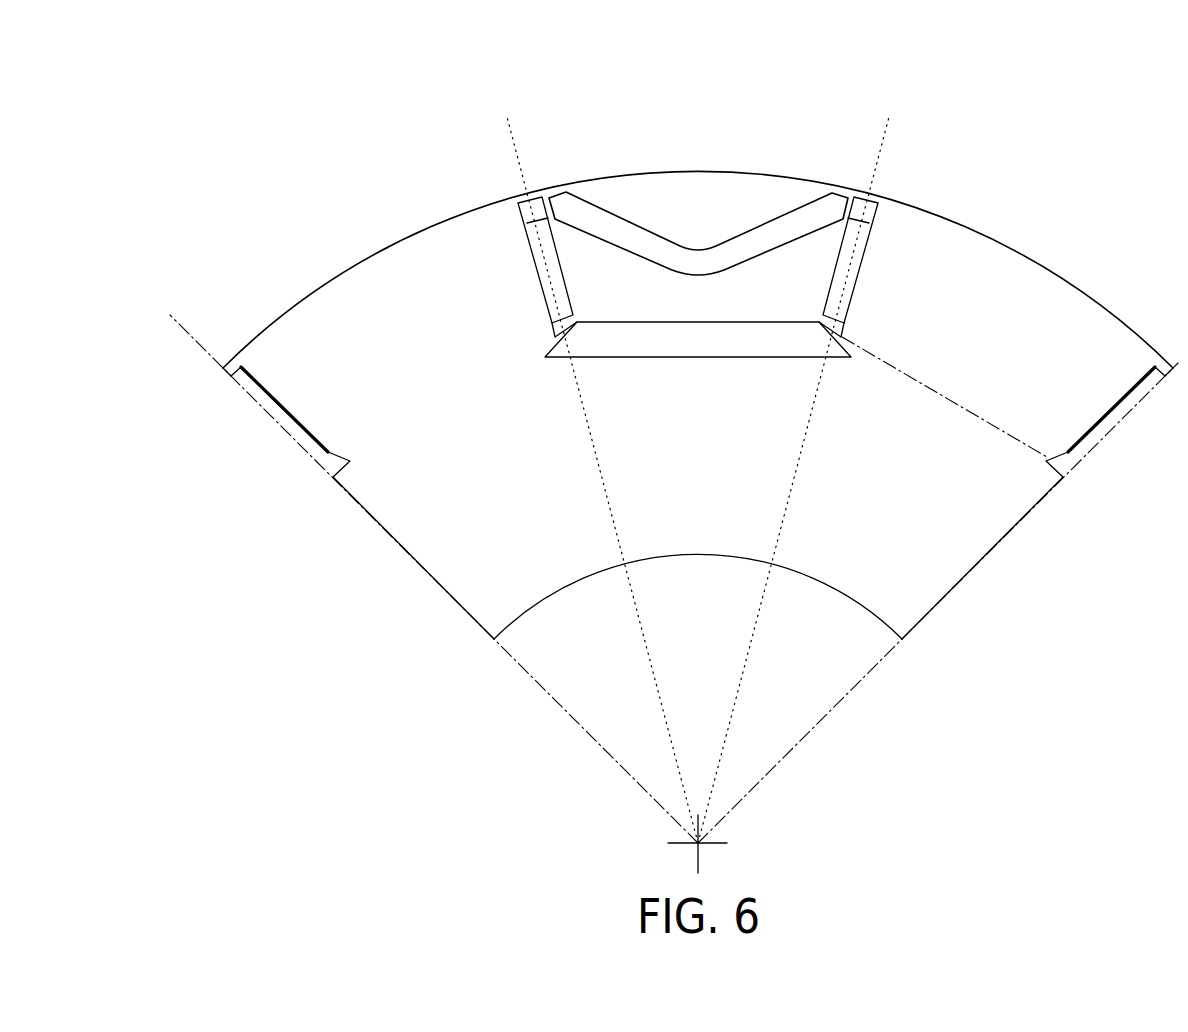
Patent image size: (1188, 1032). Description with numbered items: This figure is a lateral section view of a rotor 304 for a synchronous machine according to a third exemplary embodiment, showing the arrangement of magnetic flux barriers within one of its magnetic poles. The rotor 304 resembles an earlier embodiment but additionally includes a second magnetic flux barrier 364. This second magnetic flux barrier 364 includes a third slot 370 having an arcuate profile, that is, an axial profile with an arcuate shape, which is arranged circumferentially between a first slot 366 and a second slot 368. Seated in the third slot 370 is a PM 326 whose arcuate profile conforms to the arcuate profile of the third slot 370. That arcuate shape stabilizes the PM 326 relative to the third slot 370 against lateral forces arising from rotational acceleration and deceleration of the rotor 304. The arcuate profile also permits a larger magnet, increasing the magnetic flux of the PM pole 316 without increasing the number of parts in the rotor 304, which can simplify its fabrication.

The rotor 304 is at (450, 644).
The PM pole 316 is at (712, 114).
The PM 326 is at (685, 247).
The second magnetic flux barrier 364 is at (936, 270).
The first slot 366 is at (530, 212).
The second slot 368 is at (873, 213).
The third slot 370 is at (848, 212).